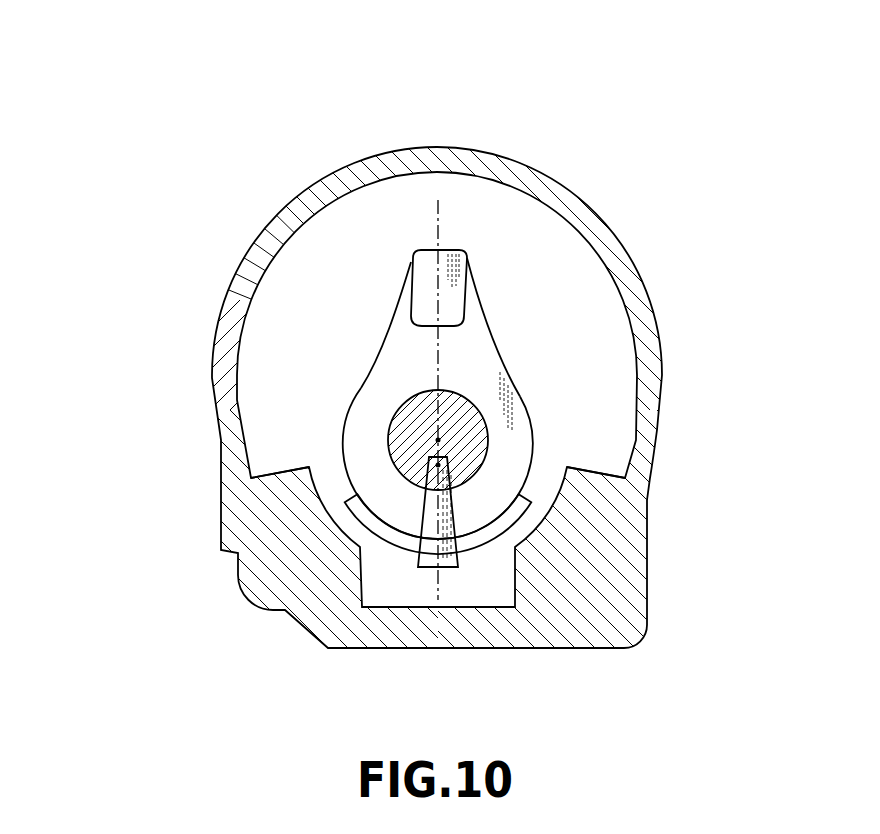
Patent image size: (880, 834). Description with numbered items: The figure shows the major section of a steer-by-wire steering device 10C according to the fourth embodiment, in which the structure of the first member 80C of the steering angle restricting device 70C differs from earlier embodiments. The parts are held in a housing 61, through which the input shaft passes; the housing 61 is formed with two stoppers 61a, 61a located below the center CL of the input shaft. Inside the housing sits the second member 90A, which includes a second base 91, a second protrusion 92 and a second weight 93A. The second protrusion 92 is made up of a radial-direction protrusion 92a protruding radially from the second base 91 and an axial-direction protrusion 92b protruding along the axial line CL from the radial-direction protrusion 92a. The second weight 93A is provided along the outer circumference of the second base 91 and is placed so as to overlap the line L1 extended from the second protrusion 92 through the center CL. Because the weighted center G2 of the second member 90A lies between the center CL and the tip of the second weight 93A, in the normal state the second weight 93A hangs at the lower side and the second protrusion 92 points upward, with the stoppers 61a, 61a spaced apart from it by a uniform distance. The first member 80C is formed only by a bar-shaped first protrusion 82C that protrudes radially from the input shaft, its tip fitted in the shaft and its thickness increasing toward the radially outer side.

The steering angle restricting device 70C is at (440, 367).
The steering device 10C is at (440, 367).
The housing 61 is at (382, 160).
The stoppers 61a is at (261, 478).
The second member 90A is at (453, 381).
The second base 91 is at (357, 377).
The second protrusion 92 is at (478, 328).
The radial-direction protrusion 92a is at (509, 363).
The axial-direction protrusion 92b is at (451, 301).
The second weight 93A is at (364, 522).
The first protrusion 82C is at (496, 583).
The first member 80C is at (458, 566).
The axial line (center of the input shaft) CL is at (440, 439).
The weighted center of the second member G2 is at (440, 464).
The line extended from the second protrusion L1 is at (440, 588).